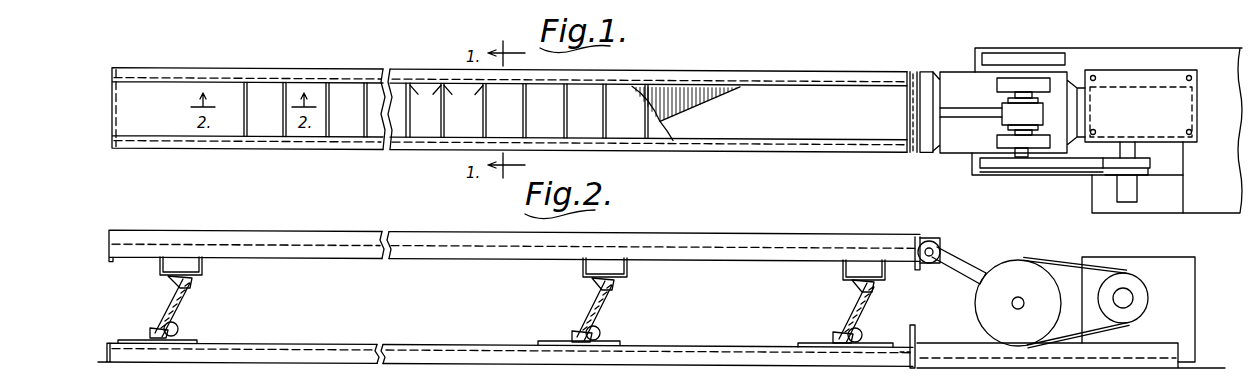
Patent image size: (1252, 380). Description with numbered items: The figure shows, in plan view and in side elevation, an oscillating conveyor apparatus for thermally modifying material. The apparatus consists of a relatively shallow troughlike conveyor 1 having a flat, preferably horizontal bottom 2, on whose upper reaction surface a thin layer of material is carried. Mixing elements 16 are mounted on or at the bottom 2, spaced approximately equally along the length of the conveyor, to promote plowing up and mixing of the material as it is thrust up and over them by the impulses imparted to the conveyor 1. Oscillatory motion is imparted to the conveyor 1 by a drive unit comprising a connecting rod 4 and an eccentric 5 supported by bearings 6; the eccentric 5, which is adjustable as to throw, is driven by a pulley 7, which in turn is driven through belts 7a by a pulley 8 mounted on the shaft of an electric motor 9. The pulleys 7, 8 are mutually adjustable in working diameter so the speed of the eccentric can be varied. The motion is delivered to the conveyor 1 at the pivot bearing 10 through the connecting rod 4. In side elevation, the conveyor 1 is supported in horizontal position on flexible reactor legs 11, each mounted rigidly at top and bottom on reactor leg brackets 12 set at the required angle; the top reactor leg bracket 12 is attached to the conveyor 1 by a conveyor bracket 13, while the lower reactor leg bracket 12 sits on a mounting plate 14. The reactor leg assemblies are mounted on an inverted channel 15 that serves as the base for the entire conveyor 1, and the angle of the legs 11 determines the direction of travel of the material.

In FIG. 1, the conveyor 1 is at (256, 64).
In FIG. 2, the conveyor 1 is at (188, 230).
In FIG. 1, the bottom 2 is at (460, 126).
In FIG. 2, the bottom 2 is at (326, 242).
In FIG. 1, the connecting rod 4 is at (961, 110).
In FIG. 2, the connecting rod 4 is at (968, 263).
In FIG. 1, the eccentric 5 is at (1033, 112).
In FIG. 1, the bearings 6 is at (1032, 85).
In FIG. 1, the pulley 7 is at (1000, 173).
In FIG. 2, the pulley 7 is at (979, 296).
In FIG. 1, the belts 7a is at (1090, 169).
In FIG. 2, the belts 7a is at (1062, 262).
In FIG. 1, the pulley 8 is at (1148, 171).
In FIG. 2, the pulley 8 is at (1130, 281).
In FIG. 1, the electric motor 9 is at (1178, 108).
In FIG. 2, the electric motor 9 is at (1178, 283).
In FIG. 2, the pivot bearing 10 is at (922, 246).
In FIG. 2, the flexible reactor legs 11 is at (174, 313).
In FIG. 2, the reactor leg brackets 12 is at (170, 283).
In FIG. 2, the conveyor bracket 13 is at (203, 266).
In FIG. 2, the mounting plate 14 is at (186, 341).
In FIG. 2, the inverted channel 15 is at (323, 343).
In FIG. 1, the mixing elements 16 is at (484, 102).